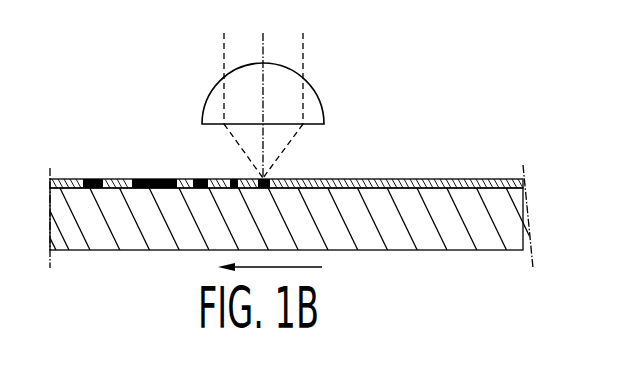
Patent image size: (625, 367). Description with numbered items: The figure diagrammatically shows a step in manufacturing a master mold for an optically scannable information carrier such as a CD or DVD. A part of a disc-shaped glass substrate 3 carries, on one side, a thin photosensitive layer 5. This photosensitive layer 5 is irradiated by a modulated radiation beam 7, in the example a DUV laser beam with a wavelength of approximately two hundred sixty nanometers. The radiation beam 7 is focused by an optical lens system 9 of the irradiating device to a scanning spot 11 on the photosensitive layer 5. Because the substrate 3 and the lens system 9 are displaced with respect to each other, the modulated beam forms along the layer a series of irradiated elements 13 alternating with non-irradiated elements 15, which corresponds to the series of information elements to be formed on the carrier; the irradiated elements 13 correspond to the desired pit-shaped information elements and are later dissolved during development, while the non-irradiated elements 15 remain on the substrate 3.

The substrate 3 is at (410, 225).
The photosensitive layer 5 is at (430, 178).
The radiation beam 7 is at (288, 146).
The optical lens system 9 is at (317, 97).
The scanning spot 11 is at (265, 178).
The irradiated elements 13 is at (197, 180).
The non-irradiated elements 15 is at (118, 180).